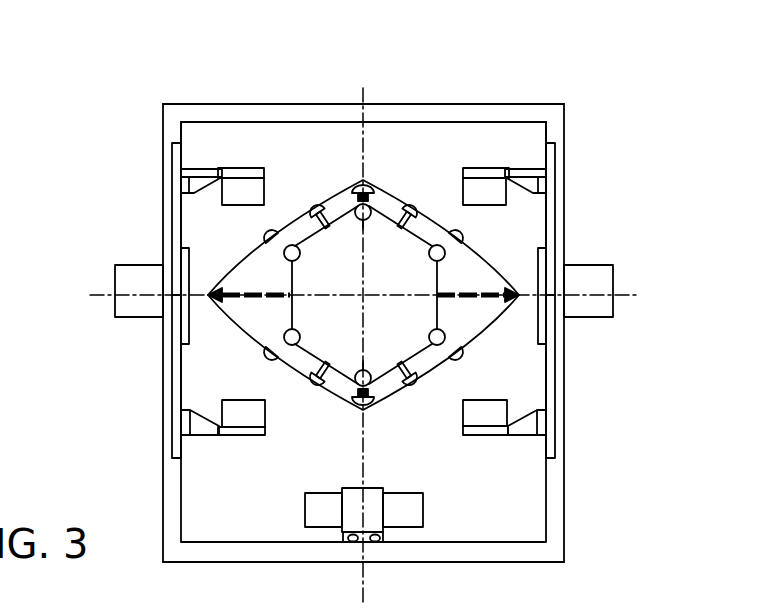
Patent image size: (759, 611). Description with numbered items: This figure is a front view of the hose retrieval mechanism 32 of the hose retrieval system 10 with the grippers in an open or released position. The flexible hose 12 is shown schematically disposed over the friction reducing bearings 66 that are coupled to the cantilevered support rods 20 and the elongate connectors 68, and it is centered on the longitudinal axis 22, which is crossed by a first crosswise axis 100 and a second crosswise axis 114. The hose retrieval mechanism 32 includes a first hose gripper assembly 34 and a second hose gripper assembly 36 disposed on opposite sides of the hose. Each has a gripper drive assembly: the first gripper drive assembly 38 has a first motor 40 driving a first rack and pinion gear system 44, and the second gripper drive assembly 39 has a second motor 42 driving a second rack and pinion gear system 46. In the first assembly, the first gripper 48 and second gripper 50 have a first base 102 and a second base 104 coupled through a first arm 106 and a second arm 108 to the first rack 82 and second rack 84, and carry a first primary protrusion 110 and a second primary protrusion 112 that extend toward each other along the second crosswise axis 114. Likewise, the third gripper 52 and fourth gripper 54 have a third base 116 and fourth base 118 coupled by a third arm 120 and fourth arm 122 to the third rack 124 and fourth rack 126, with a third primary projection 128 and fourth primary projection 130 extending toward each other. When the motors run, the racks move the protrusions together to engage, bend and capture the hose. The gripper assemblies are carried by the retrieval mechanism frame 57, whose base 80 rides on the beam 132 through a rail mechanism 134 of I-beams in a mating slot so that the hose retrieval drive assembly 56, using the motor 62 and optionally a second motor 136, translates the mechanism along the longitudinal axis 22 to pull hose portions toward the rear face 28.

The hose retrieval system 10 is at (658, 33).
The hose retrieval mechanism 32 is at (532, 74).
The first hose gripper assembly 34 is at (511, 141).
The second hose gripper assembly 36 is at (207, 141).
The retrieval mechanism frame 57 is at (287, 104).
The base 80 is at (566, 558).
The second crosswise axis 114 is at (367, 98).
The first crosswise axis 100 is at (93, 300).
The longitudinal axis 22 is at (366, 294).
The third rack 124 is at (178, 190).
The fourth rack 126 is at (178, 432).
The first rack 82 is at (550, 187).
The second rack 84 is at (549, 409).
The second motor 42 is at (130, 283).
The first motor 40 is at (598, 283).
The second rack and pinion gear system 46 is at (182, 323).
The first rack and pinion gear system 44 is at (545, 323).
The second gripper drive assembly 39 is at (130, 241).
The first gripper drive assembly 38 is at (584, 238).
The third arm 120 is at (202, 176).
The first arm 106 is at (524, 172).
The third base 116 is at (263, 176).
The third primary projection 128 is at (247, 190).
The first base 102 is at (462, 172).
The first primary protrusion 110 is at (481, 192).
The third gripper 52 is at (209, 208).
The first gripper 48 is at (517, 208).
The fourth arm 122 is at (203, 432).
The second arm 108 is at (522, 432).
The fourth primary projection 130 is at (256, 415).
The fourth base 118 is at (241, 432).
The second primary protrusion 112 is at (470, 416).
The second base 104 is at (483, 432).
The fourth gripper 54 is at (207, 402).
The second gripper 50 is at (494, 390).
The flexible hose 12 is at (367, 180).
The elongate connectors 68 is at (318, 236).
The cantilevered support rods 20 is at (296, 261).
The friction reducing bearings 66 is at (314, 212).
The beam 132 is at (374, 490).
The second motor 136 is at (313, 510).
The motor 62 is at (418, 509).
The hose retrieval drive assembly 56 is at (440, 524).
The rail mechanism 134 is at (378, 542).
The rear face 28 is at (582, 606).